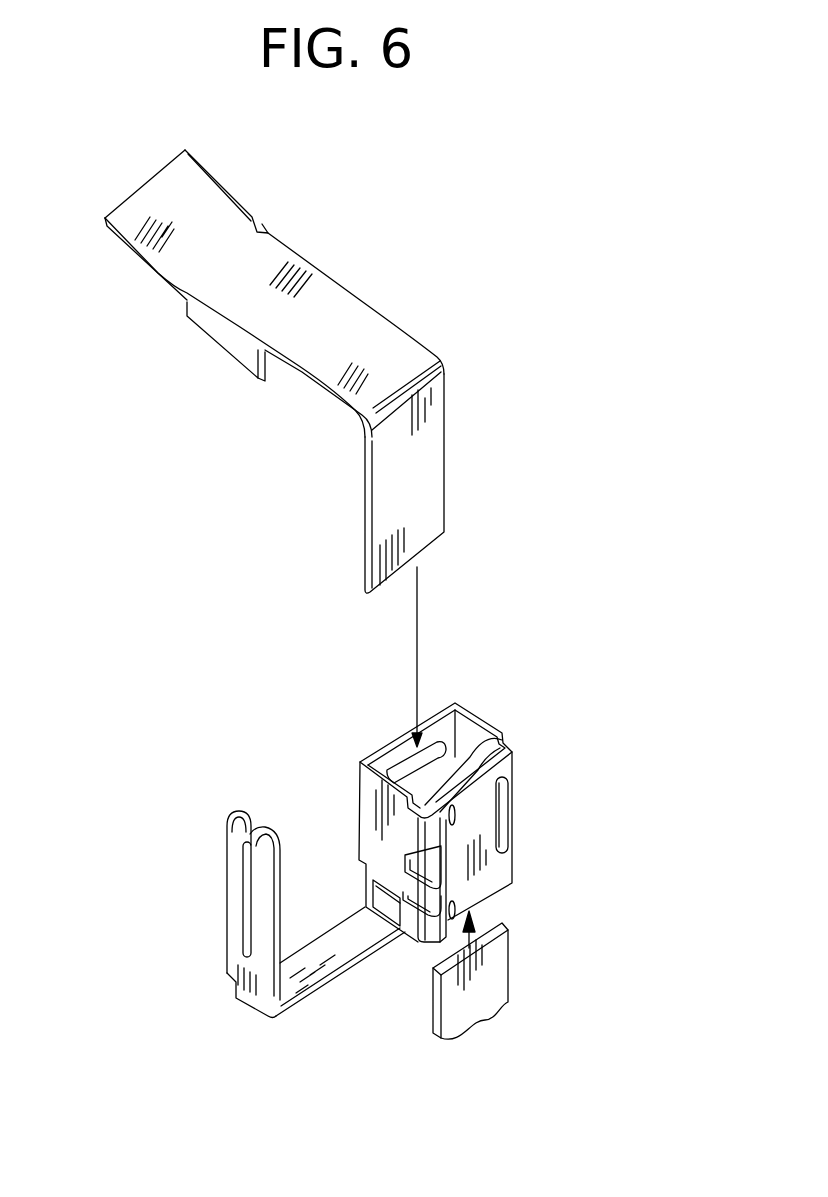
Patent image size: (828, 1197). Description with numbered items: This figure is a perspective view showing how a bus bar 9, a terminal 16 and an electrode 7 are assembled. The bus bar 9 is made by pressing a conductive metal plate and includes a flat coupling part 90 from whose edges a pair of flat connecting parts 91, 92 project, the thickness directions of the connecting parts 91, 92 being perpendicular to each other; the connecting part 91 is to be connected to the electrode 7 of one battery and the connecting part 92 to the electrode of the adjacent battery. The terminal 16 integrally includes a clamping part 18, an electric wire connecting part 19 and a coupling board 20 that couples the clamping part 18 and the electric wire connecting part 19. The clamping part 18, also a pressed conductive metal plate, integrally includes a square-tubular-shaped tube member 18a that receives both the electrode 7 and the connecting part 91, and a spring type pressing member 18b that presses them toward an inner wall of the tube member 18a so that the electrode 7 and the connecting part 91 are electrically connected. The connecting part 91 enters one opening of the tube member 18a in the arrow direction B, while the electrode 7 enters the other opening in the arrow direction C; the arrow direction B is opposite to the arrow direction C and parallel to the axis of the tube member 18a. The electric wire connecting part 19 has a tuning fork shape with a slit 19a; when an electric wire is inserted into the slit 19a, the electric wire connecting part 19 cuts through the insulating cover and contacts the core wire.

The bus bar 9 is at (322, 366).
The coupling part 90 is at (358, 316).
The connecting part 91 is at (423, 487).
The connecting part 92 is at (233, 342).
The terminal 16 is at (519, 771).
The clamping part 18 is at (499, 782).
The tube member 18a is at (492, 862).
The pressing member 18b is at (465, 760).
The electric wire connecting part 19 is at (186, 914).
The slit 19a is at (248, 898).
The coupling board 20 is at (347, 968).
The electrode 7 is at (493, 980).
The arrow direction B is at (417, 627).
The arrow direction C is at (498, 925).